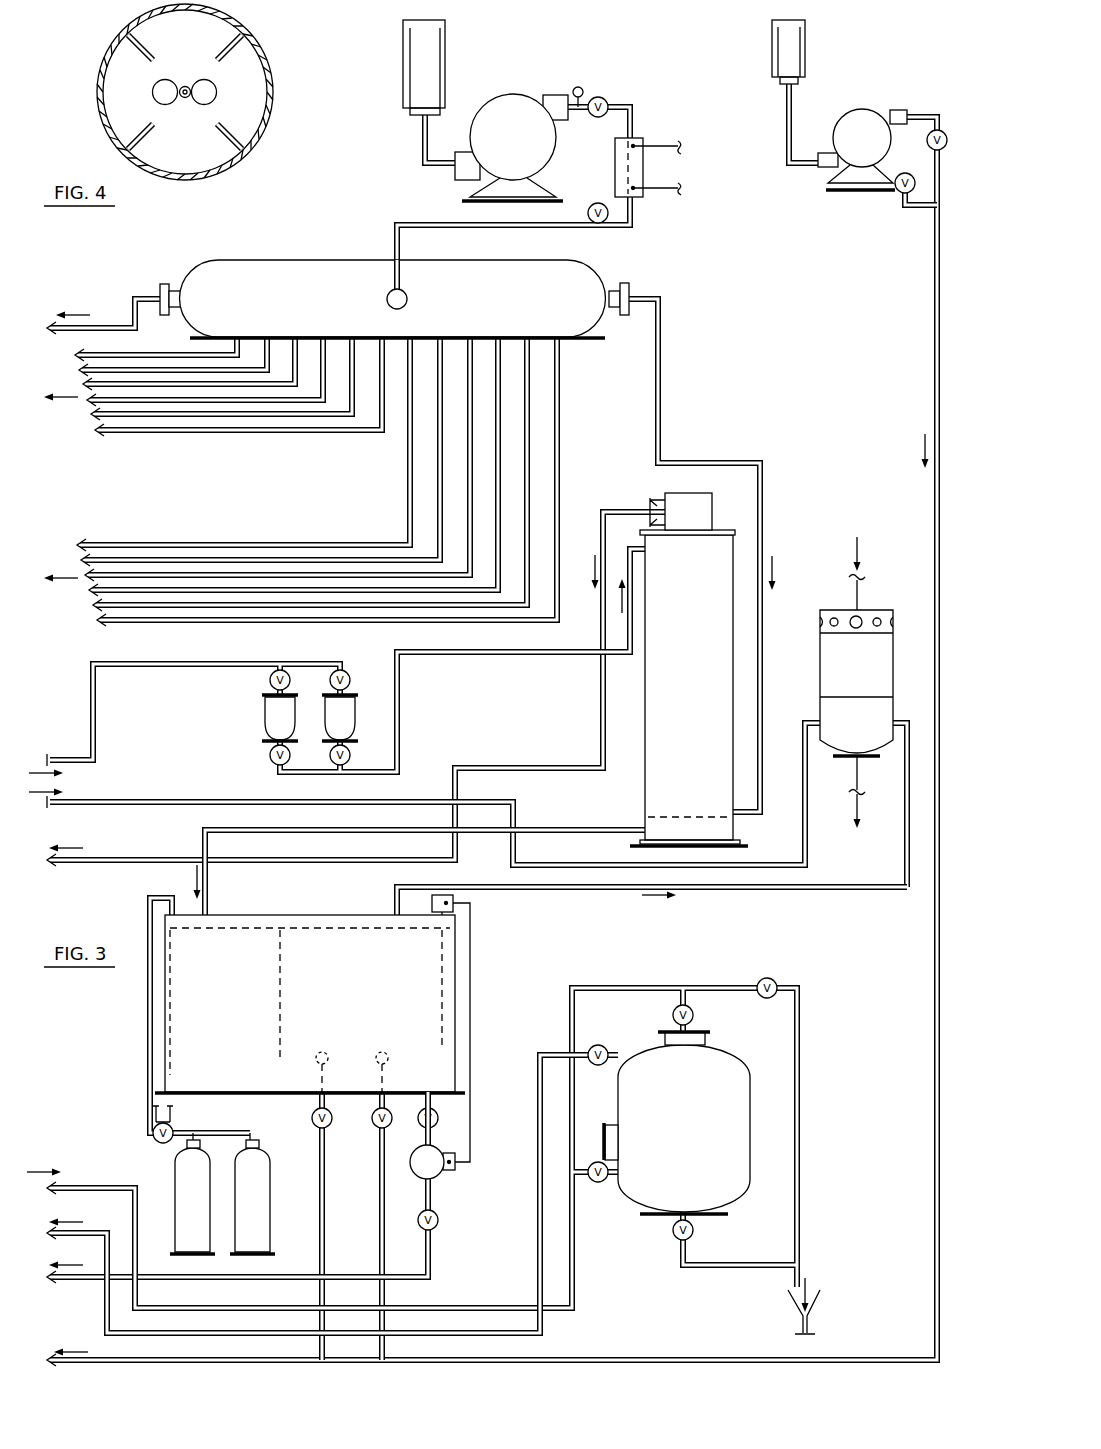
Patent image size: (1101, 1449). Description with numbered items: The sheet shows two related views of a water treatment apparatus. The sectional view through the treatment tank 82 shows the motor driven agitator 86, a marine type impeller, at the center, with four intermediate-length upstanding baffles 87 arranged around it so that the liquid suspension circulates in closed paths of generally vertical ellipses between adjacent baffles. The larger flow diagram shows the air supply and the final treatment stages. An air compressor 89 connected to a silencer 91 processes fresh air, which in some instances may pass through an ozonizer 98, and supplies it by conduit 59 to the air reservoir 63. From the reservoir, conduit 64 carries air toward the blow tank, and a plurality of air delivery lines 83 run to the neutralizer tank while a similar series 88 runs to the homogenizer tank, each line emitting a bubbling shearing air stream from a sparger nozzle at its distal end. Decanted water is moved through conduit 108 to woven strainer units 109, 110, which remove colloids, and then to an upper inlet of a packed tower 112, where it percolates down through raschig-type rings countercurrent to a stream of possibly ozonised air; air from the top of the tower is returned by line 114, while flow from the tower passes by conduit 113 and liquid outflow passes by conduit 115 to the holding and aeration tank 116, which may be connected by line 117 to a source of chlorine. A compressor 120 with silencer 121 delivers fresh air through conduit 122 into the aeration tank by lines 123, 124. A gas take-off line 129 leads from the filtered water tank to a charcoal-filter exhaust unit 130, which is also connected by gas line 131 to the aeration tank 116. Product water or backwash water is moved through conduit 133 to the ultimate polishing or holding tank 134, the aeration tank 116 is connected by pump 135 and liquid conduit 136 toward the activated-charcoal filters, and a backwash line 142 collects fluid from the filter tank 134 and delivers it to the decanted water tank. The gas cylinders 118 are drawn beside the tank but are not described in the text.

In FIG. 4, the treatment tank 82 is at (281, 40).
In FIG. 4, the upstanding baffles 87 is at (128, 48).
In FIG. 4, the motor driven agitator 86 is at (184, 98).
In FIG. 3, the conduit 59 is at (430, 222).
In FIG. 3, the air reservoir 63 is at (343, 288).
In FIG. 3, the conduit 64 is at (110, 325).
In FIG. 3, the air delivery lines 83 is at (76, 342).
In FIG. 3, the air delivery lines 88 is at (76, 530).
In FIG. 3, the air compressor 89 is at (530, 146).
In FIG. 3, the silencer 91 is at (432, 70).
In FIG. 3, the ozonizer 98 is at (643, 162).
In FIG. 3, the conduit 108 is at (70, 757).
In FIG. 3, the woven strainer unit 109 is at (272, 715).
In FIG. 3, the woven strainer unit 110 is at (333, 710).
In FIG. 3, the packed tower 112 is at (655, 750).
In FIG. 3, the conduit 113 is at (762, 530).
In FIG. 3, the line 114 is at (603, 718).
In FIG. 3, the conduit 115 is at (610, 830).
In FIG. 3, the holding and aeration tank 116 is at (248, 920).
In FIG. 3, the line 117 is at (148, 1005).
In FIG. 3, the gas cylinders 118 is at (183, 1163).
In FIG. 3, the compressor 120 is at (848, 133).
In FIG. 3, the silencer 121 is at (788, 55).
In FIG. 3, the conduit 122 is at (937, 265).
In FIG. 3, the line 123 is at (325, 1150).
In FIG. 3, the line 124 is at (383, 1170).
In FIG. 3, the gas take-off line 129 is at (55, 805).
In FIG. 3, the charcoal-filter exhaust unit 130 is at (845, 665).
In FIG. 3, the gas line 131 is at (800, 890).
In FIG. 3, the conduit 133 is at (100, 1185).
In FIG. 3, the polishing or holding tank 134 is at (722, 1092).
In FIG. 3, the pump 135 is at (434, 1178).
In FIG. 3, the liquid conduit 136 is at (90, 1280).
In FIG. 3, the backwash line 142 is at (80, 1231).